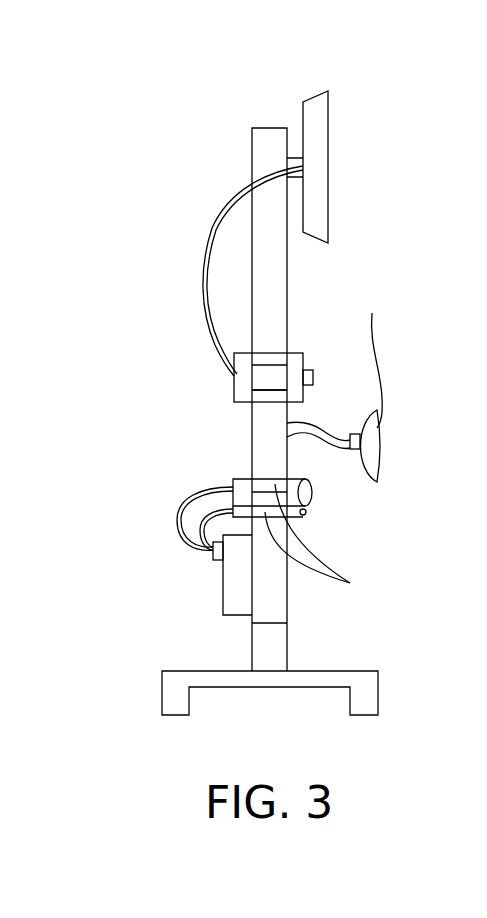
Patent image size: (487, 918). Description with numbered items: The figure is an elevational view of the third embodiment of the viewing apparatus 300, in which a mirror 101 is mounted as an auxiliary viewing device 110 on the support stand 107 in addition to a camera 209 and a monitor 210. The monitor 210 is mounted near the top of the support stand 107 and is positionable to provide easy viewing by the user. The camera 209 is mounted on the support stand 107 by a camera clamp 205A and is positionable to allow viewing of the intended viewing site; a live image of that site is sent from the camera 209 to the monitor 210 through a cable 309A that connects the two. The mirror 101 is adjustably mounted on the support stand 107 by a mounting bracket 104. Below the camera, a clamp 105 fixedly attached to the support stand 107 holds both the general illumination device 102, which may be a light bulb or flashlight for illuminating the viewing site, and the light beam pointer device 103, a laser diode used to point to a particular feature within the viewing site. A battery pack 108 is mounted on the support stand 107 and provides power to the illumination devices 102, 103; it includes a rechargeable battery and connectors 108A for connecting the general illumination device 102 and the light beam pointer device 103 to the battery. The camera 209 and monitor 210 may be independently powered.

The viewing apparatus 300 is at (156, 126).
The monitor 210 is at (318, 150).
The viewing device 110 is at (318, 218).
The cable 309A is at (203, 352).
The camera 209 is at (243, 391).
The camera clamp 205A is at (272, 395).
The mirror 101 is at (377, 452).
The mounting bracket 104 is at (362, 475).
The general illumination device 102 is at (305, 495).
The light beam pointer device 103 is at (303, 514).
The clamp 105 is at (332, 542).
The connectors 108A is at (213, 553).
The battery pack 108 is at (237, 606).
The support stand 107 is at (276, 603).